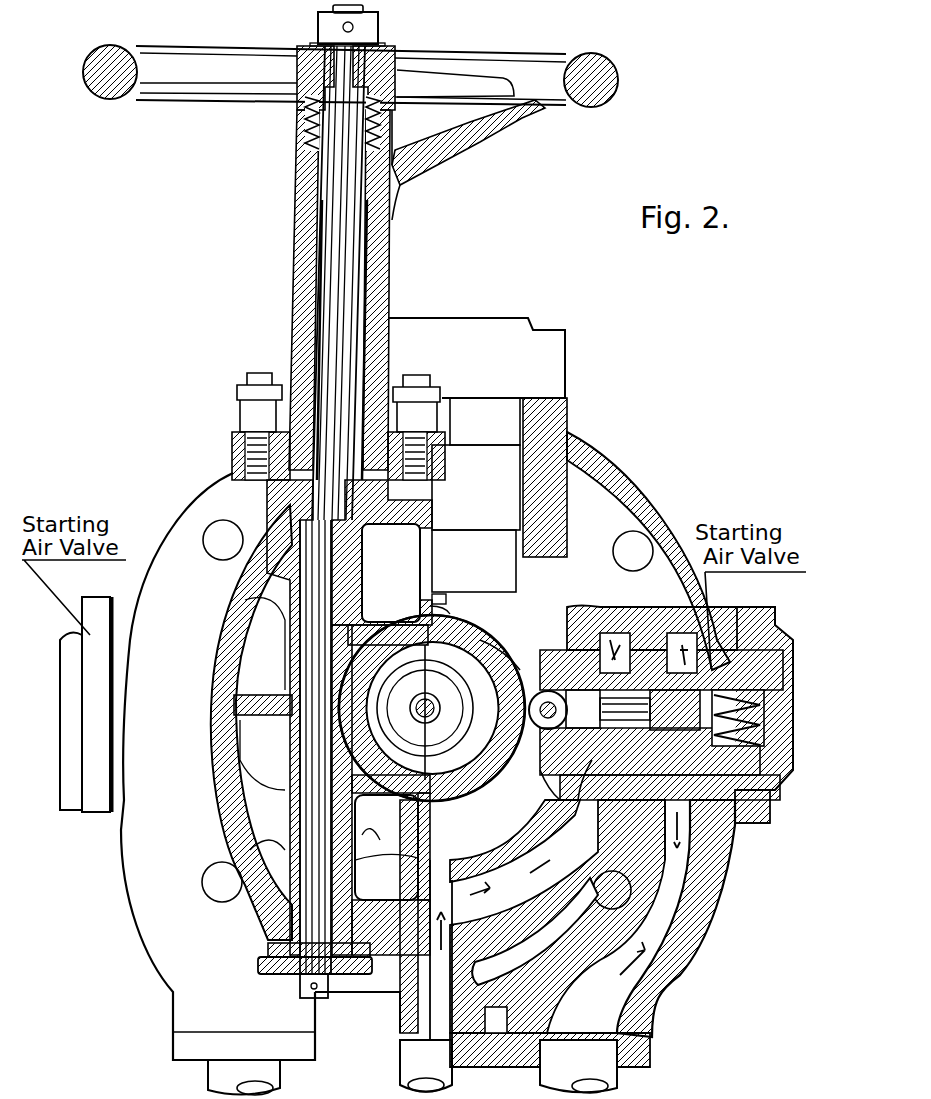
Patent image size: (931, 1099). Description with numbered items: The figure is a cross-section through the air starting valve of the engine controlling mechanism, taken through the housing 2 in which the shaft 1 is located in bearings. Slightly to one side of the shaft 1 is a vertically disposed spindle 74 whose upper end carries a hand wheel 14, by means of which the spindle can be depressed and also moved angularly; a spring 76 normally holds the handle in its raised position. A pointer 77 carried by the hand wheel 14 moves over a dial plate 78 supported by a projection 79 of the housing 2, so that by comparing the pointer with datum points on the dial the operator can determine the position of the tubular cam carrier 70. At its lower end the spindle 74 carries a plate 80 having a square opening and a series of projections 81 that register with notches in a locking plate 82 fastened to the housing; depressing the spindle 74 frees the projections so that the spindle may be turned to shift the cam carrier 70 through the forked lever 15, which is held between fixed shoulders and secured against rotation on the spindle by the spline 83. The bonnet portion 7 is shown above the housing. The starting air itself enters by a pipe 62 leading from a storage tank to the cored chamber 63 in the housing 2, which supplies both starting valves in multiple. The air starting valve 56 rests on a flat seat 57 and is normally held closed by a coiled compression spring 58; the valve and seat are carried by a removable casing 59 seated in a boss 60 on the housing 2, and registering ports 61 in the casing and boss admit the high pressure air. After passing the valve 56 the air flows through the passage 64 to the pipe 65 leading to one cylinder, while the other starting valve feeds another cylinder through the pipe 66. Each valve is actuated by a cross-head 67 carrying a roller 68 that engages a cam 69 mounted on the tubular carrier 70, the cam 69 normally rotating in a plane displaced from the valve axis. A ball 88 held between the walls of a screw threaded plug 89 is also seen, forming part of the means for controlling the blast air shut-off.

The shaft 1 is at (383, 676).
The housing 2 is at (632, 492).
The bonnet block 7 is at (477, 455).
The hand wheel 14 is at (174, 96).
The forked lever 15 is at (386, 847).
The air starting valve 56 is at (780, 786).
The flat seat 57 is at (677, 823).
The coiled compression spring 58 is at (776, 726).
The removable casing 59 is at (754, 836).
The boss 60 is at (597, 612).
The ports 61 is at (639, 745).
The pipe 62 is at (448, 1074).
The cored passage or chamber 63 is at (557, 916).
The passage 64 is at (676, 918).
The pipe 65 is at (550, 1050).
The pipe 66 is at (212, 1081).
The cross-head 67 is at (548, 768).
The roller 68 is at (546, 688).
The cam 69 is at (525, 665).
The tubular carrier 70 is at (478, 784).
The spindle 74 is at (335, 265).
The spring 76 is at (304, 120).
The pointer 77 is at (436, 74).
The dial plate 78 is at (505, 132).
The projection 79 is at (458, 153).
The plate 80 is at (354, 970).
The projections 81 is at (262, 978).
The locking plate 82 is at (290, 960).
The spline 83 is at (375, 834).
The ball 88 is at (445, 612).
The screw threaded plug 89 is at (447, 598).